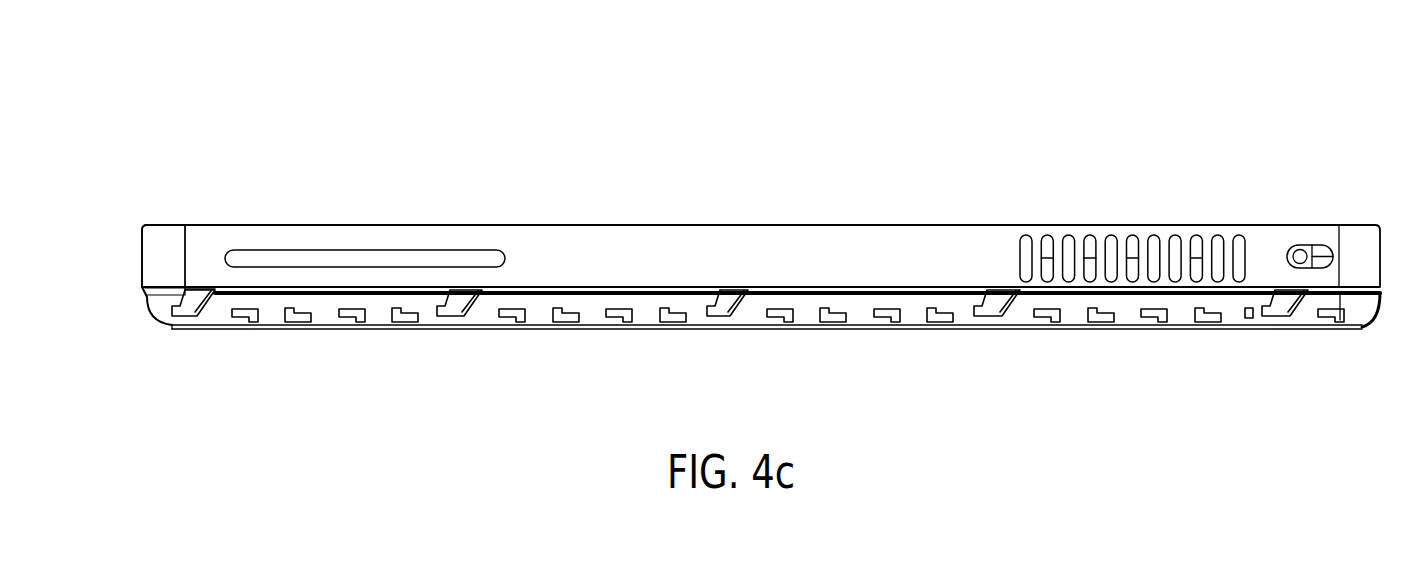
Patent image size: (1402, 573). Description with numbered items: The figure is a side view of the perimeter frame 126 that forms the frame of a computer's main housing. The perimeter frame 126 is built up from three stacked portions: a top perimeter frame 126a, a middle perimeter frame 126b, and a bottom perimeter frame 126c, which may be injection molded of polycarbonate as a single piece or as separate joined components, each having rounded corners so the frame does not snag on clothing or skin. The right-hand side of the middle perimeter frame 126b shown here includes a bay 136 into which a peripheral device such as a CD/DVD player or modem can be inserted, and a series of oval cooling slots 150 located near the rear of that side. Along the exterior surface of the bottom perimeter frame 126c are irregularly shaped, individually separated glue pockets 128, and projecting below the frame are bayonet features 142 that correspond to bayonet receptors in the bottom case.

The perimeter frame 126 is at (817, 120).
The top perimeter frame 126a is at (154, 222).
The middle perimeter frame 126b is at (160, 262).
The bottom perimeter frame 126c is at (196, 332).
The bay 136 is at (352, 258).
The bayonet features 142 is at (723, 302).
The glue pockets 128 is at (1200, 322).
The cooling slots 150 is at (1195, 240).